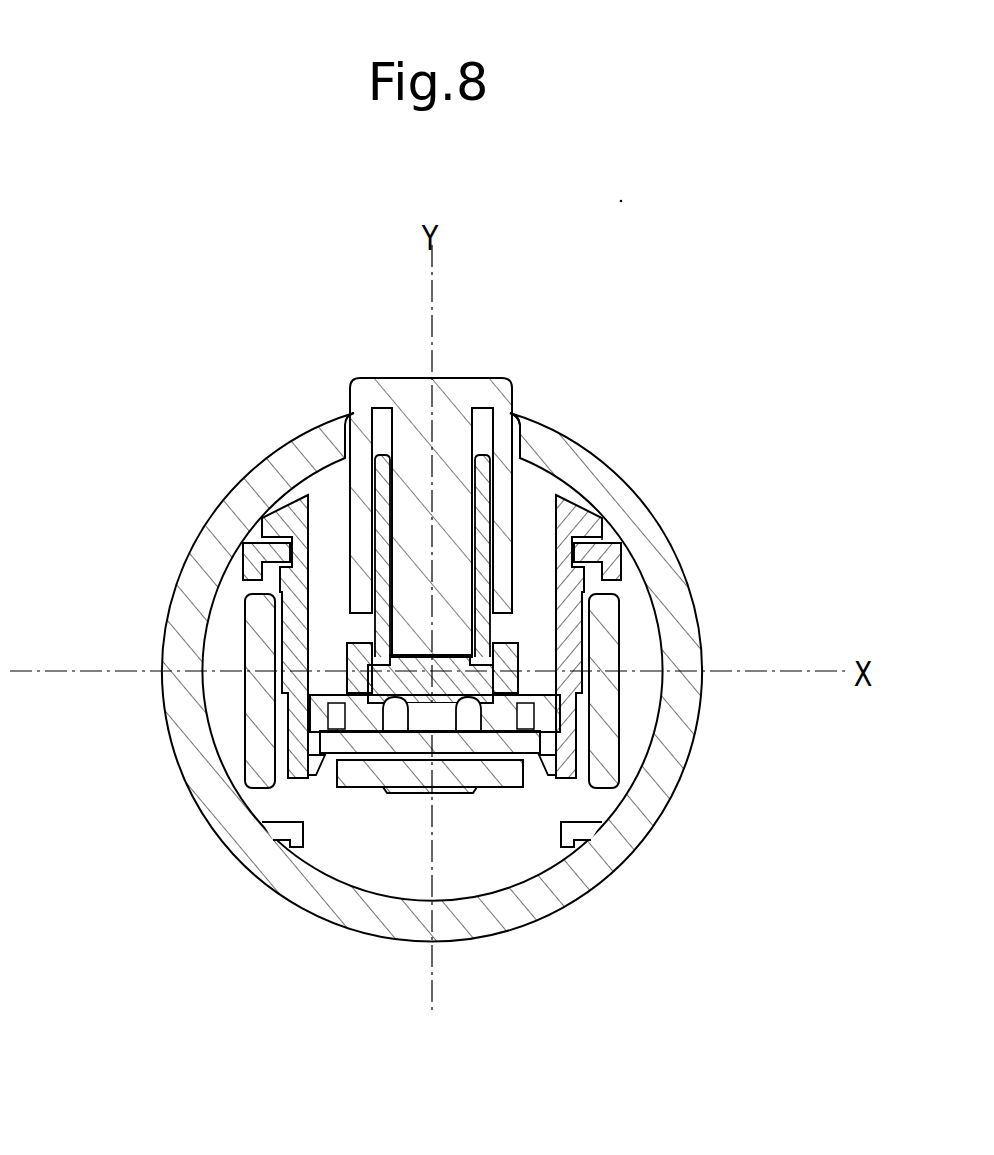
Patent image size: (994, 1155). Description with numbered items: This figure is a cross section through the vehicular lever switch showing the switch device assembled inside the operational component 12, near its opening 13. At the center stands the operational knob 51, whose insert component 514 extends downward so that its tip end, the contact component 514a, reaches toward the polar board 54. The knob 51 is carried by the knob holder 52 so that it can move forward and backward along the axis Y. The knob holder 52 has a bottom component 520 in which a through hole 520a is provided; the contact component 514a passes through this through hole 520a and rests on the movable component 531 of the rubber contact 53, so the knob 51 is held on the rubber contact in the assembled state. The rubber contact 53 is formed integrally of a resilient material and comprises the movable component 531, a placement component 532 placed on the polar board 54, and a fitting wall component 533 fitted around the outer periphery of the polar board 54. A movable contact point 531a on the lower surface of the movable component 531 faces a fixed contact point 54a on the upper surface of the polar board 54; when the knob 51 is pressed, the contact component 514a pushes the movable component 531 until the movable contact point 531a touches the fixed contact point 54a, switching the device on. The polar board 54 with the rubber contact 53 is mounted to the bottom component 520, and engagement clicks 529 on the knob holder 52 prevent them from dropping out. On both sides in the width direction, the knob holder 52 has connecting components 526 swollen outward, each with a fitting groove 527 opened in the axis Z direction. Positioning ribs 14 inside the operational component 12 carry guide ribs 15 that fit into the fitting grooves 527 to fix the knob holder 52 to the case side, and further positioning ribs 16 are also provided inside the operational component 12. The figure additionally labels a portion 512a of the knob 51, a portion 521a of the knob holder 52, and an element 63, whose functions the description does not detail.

The operational component 12 is at (275, 480).
The opening 13 is at (504, 425).
The positioning ribs 14 is at (265, 552).
The guide rib 15 is at (246, 555).
The positioning ribs 16 is at (283, 838).
The operational knob 51 is at (503, 370).
The knob holder 52 is at (582, 662).
The rubber contact 53 is at (310, 730).
The polar board 54 is at (350, 745).
The fixed contact point 54a is at (480, 790).
The guide portion 63 is at (619, 717).
The insert component 514 is at (455, 465).
The contact component 514a is at (495, 645).
The stem insert 512a is at (355, 517).
The bottom component 520 is at (345, 645).
The through hole 520a is at (350, 600).
The bracket projection 521a is at (592, 535).
The connecting components 526 is at (590, 522).
The fitting grooves 527 is at (602, 578).
The engagement clicks 529 is at (265, 770).
The movable component 531 is at (443, 733).
The movable contact point 531a is at (412, 733).
The placement component 532 is at (368, 753).
The fitting wall component 533 is at (318, 700).